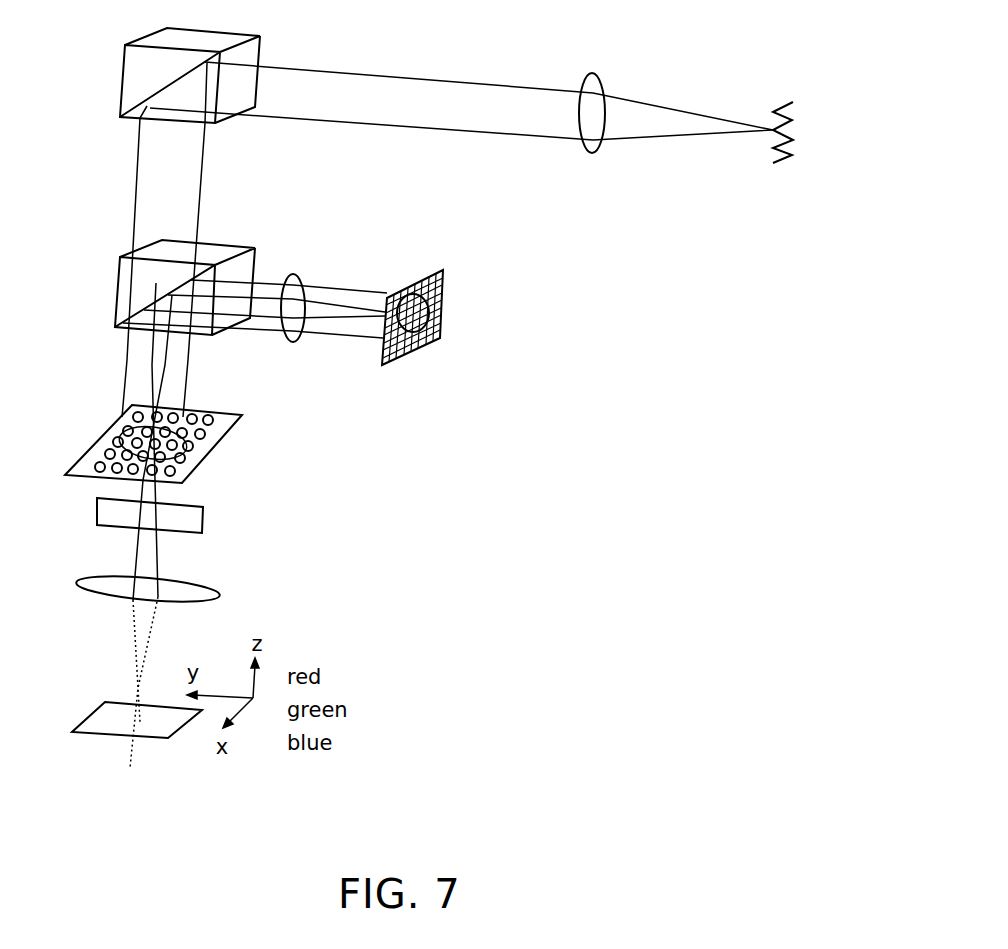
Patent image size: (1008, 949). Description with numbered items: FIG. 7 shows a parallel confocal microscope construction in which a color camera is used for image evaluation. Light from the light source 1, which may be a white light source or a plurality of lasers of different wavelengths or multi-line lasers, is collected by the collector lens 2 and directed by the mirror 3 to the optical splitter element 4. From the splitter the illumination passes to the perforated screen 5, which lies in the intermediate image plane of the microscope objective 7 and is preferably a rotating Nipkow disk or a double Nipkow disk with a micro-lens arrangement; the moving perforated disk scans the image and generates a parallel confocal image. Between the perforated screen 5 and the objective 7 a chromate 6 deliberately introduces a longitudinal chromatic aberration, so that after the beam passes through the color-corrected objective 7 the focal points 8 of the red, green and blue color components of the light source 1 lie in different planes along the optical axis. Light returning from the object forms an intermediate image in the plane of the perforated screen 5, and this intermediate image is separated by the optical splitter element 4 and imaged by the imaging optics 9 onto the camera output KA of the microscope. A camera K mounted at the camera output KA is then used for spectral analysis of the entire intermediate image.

The light source 1 is at (793, 102).
The collector lens 2 is at (602, 77).
The mirror 3 is at (124, 78).
The optical splitter element 4 is at (238, 243).
The perforated screen 5 is at (120, 418).
The chromate 6 is at (97, 505).
The microscope objective 7 is at (80, 587).
The focal points 8 is at (83, 720).
The imaging optics 9 is at (297, 276).
The camera K is at (440, 273).
The camera output KA is at (443, 307).